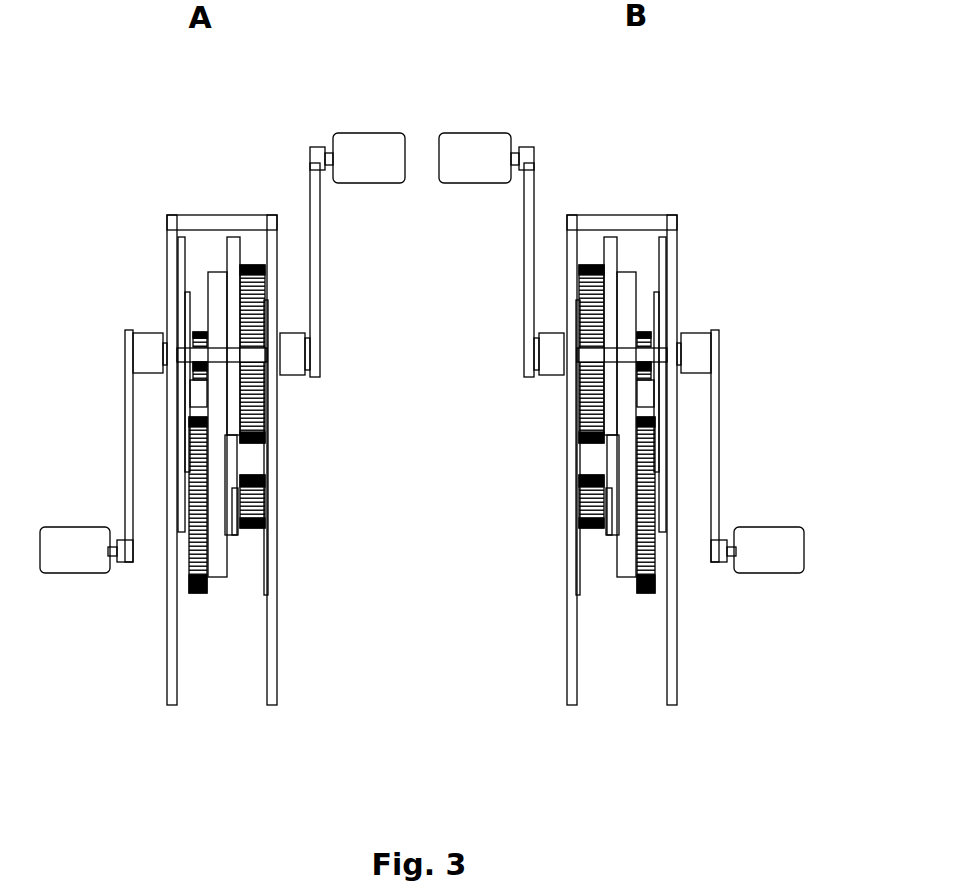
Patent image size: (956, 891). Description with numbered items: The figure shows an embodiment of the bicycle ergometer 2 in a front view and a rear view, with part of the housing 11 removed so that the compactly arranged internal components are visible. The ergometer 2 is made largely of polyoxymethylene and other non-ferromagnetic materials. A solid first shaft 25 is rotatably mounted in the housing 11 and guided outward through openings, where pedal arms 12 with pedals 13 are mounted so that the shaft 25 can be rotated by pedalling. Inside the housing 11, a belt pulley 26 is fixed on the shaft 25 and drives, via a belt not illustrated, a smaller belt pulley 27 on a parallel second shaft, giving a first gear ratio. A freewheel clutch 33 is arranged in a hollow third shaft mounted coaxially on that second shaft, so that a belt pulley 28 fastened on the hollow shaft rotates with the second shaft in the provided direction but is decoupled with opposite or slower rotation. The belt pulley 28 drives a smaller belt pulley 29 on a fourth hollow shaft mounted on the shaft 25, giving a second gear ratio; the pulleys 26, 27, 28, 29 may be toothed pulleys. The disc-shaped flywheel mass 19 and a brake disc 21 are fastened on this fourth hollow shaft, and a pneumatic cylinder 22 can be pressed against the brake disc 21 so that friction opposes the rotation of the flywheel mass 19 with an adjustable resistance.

The ergometer 2 is at (218, 131).
The housing 11 is at (272, 612).
The pedal arms 12 is at (315, 227).
The pedals 13 is at (358, 165).
The flywheel mass 19 is at (217, 278).
The brake disc 21 is at (182, 280).
The pneumatic cylinder 22 is at (193, 398).
The first shaft 25 is at (567, 367).
The belt pulley 26 is at (591, 408).
The belt pulley 27 is at (586, 495).
The belt pulley 28 is at (193, 570).
The belt pulley 29 is at (203, 337).
The freewheel clutch 33 is at (626, 523).